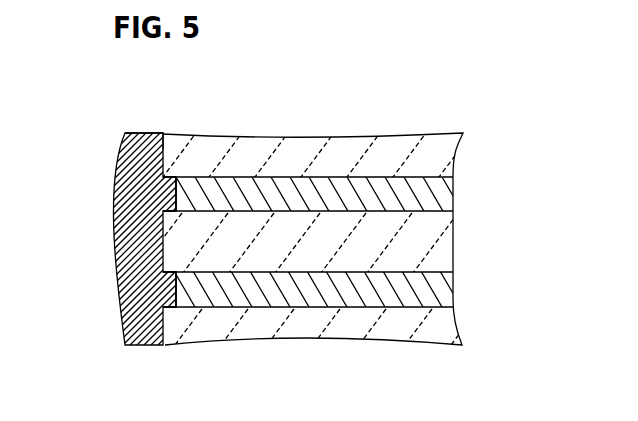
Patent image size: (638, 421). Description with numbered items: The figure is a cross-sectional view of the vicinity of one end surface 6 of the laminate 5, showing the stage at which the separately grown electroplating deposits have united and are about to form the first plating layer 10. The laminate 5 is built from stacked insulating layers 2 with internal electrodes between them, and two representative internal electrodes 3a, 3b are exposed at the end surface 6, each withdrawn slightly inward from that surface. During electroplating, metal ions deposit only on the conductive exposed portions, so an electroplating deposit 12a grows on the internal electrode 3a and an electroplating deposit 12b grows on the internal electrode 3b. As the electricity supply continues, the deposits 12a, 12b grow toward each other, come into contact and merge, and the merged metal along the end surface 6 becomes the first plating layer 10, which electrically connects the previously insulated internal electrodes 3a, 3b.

The laminate 5 is at (408, 133).
The insulating layers 2 is at (378, 258).
The internal electrode 3a is at (447, 196).
The internal electrode 3b is at (447, 289).
The first plating layer 10 is at (119, 325).
The end surface 6 is at (163, 150).
The electroplating deposit 12a is at (160, 193).
The electroplating deposit 12b is at (148, 288).